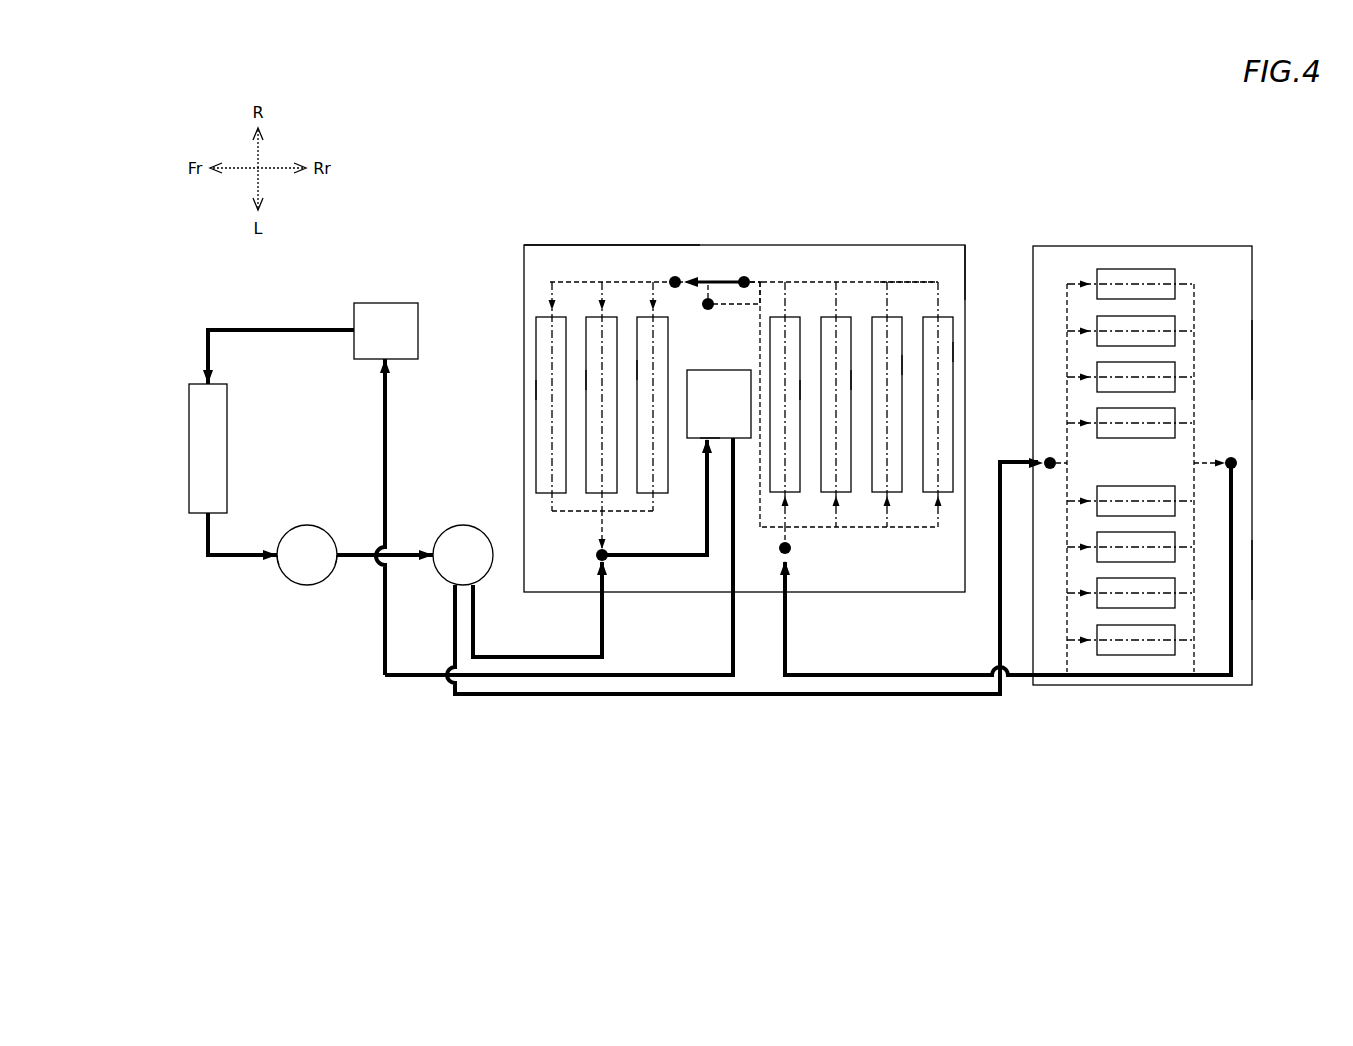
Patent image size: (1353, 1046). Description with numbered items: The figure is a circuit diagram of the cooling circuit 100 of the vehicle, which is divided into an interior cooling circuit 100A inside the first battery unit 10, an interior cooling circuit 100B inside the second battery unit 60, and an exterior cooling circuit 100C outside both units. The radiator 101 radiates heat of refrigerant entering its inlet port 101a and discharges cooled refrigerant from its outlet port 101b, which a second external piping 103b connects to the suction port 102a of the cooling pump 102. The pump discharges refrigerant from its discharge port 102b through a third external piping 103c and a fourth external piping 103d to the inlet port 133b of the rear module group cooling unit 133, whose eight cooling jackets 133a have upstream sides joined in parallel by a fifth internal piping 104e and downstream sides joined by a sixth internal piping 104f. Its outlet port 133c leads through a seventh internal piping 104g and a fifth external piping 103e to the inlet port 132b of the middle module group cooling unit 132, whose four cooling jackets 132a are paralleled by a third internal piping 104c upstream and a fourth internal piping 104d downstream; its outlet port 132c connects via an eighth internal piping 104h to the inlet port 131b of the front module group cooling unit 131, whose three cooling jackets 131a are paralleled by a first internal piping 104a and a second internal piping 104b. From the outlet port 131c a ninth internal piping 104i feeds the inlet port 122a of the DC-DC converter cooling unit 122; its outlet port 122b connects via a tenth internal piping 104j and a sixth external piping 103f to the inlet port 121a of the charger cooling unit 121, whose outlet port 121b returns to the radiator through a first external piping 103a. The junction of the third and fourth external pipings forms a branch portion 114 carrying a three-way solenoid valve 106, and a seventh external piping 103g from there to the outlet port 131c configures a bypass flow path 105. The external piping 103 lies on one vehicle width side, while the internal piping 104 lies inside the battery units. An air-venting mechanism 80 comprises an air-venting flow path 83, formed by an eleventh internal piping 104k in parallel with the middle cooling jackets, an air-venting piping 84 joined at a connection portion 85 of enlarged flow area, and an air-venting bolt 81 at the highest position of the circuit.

The first battery unit 10 is at (553, 245).
The second battery unit 60 is at (1252, 262).
The air-venting mechanism 80 is at (709, 297).
The air-venting bolt 81 is at (673, 275).
The air-venting flow path 83 is at (762, 318).
The air-venting piping 84 is at (744, 275).
The connection portion 85 is at (764, 300).
The cooling circuit 100 is at (946, 192).
The interior cooling circuit 100A is at (588, 220).
The interior cooling circuit 100B is at (1226, 312).
The exterior cooling circuit 100C is at (922, 740).
The radiator 101 is at (228, 455).
The inlet port 101a is at (216, 384).
The outlet port 101b is at (207, 520).
The cooling pump 102 is at (307, 525).
The suction port 102a is at (278, 568).
The discharge port 102b is at (343, 563).
The external piping 103 is at (963, 700).
The first external piping 103a is at (240, 328).
The second external piping 103b is at (238, 560).
The third external piping 103c is at (360, 553).
The fourth external piping 103d is at (648, 697).
The fifth external piping 103e is at (872, 678).
The sixth external piping 103f is at (410, 678).
The seventh external piping 103g is at (540, 664).
The internal piping 104 is at (915, 276).
The first internal piping 104a is at (653, 298).
The second internal piping 104b is at (650, 503).
The third internal piping 104c is at (938, 512).
The fourth internal piping 104d is at (938, 293).
The fifth internal piping 104e is at (1075, 423).
The sixth internal piping 104f is at (1187, 423).
The seventh internal piping 104g is at (1252, 568).
The eighth internal piping 104h is at (710, 280).
The ninth internal piping 104i is at (676, 553).
The tenth internal piping 104j is at (731, 565).
The eleventh internal piping 104k is at (824, 339).
The bypass flow path 105 is at (555, 659).
The three-way solenoid valve 106 is at (450, 522).
The branch portion 114 is at (449, 530).
The charger cooling unit 121 is at (396, 303).
The inlet port 121a is at (383, 368).
The outlet port 121b is at (352, 328).
The DC-DC converter cooling unit 122 is at (735, 370).
The inlet port 122a is at (707, 437).
The outlet port 122b is at (761, 542).
The front module group cooling unit 131 is at (536, 345).
The cooling jacket 131a is at (638, 372).
The inlet port 131b is at (672, 278).
The outlet port 131c is at (596, 555).
The middle module group cooling unit 132 is at (962, 316).
The cooling jacket 132a is at (953, 352).
The inlet port 132b is at (793, 552).
The outlet port 132c is at (748, 280).
The rear module group cooling unit 133 is at (1117, 255).
The cooling jacket 133a is at (1133, 410).
The inlet port 133b is at (1048, 457).
The outlet port 133c is at (1237, 463).